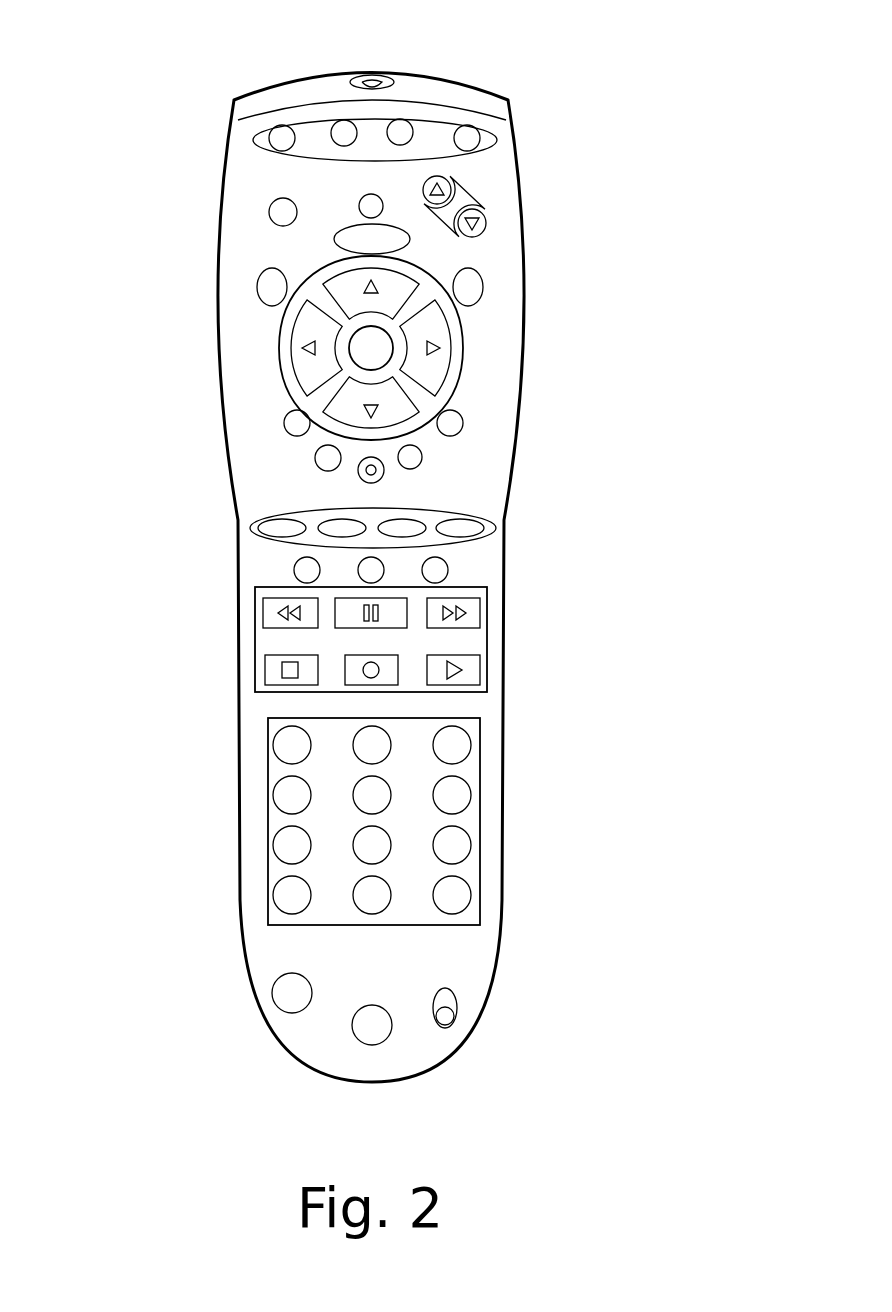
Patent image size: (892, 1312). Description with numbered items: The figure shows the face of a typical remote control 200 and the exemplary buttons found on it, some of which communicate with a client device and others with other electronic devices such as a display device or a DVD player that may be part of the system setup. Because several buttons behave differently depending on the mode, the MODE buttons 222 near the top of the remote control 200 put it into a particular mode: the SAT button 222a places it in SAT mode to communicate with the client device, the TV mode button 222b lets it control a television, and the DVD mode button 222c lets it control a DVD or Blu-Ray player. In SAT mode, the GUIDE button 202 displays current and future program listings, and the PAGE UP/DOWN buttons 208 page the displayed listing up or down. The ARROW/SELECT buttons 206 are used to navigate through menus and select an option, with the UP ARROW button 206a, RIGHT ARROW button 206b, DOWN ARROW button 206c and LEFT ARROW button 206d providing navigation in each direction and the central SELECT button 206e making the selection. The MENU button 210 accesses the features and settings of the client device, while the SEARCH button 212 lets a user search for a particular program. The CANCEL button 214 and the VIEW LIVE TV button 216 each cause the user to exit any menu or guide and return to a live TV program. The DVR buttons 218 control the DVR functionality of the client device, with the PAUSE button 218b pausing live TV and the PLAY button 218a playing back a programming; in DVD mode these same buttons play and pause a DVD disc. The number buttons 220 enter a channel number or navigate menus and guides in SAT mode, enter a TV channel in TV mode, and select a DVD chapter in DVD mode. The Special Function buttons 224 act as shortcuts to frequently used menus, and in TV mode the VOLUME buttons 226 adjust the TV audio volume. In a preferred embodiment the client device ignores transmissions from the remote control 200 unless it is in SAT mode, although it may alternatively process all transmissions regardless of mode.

The remote control 200 is at (610, 88).
The GUIDE button 202 is at (478, 287).
The ARROW/SELECT buttons 206 is at (356, 358).
The UP ARROW button 206a is at (353, 280).
The RIGHT ARROW button 206b is at (435, 352).
The DOWN ARROW button 206c is at (340, 402).
The LEFT ARROW button 206d is at (290, 353).
The SELECT button 206e is at (386, 333).
The PAGE UP/DOWN buttons 208 is at (482, 203).
The MENU button 210 is at (270, 213).
The SEARCH button 212 is at (360, 480).
The CANCEL button 214 is at (455, 427).
The VIEW LIVE TV button 216 is at (418, 460).
The DVR buttons 218 is at (375, 654).
The PLAY button 218a is at (467, 682).
The PAUSE button 218b is at (342, 626).
The number buttons 220 is at (492, 781).
The MODE buttons 222 is at (470, 110).
The SAT button 222a is at (278, 135).
The TV mode button 222b is at (343, 130).
The DVD mode button 222c is at (402, 128).
The Special Function buttons 224 is at (296, 552).
The VOLUME buttons 226 is at (334, 241).